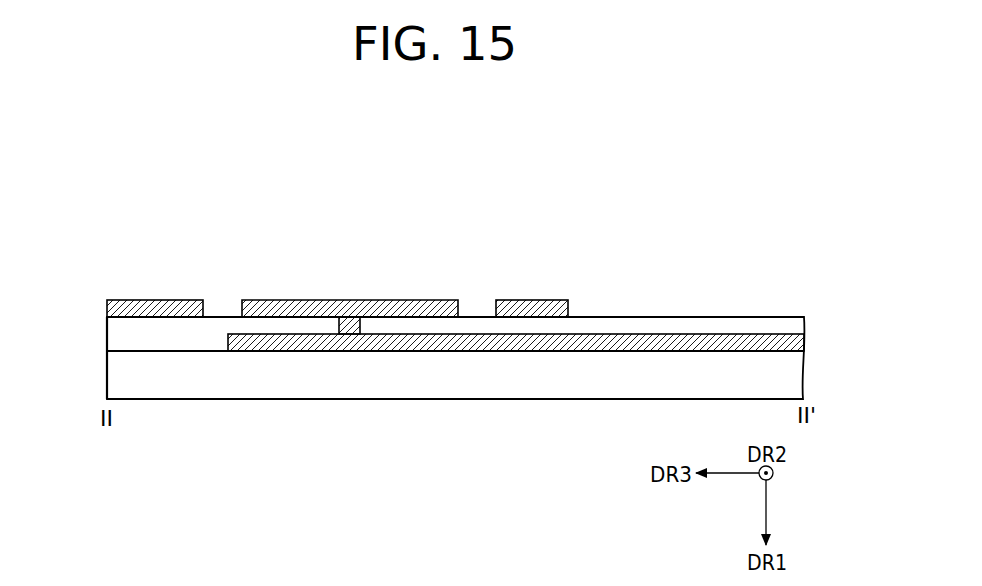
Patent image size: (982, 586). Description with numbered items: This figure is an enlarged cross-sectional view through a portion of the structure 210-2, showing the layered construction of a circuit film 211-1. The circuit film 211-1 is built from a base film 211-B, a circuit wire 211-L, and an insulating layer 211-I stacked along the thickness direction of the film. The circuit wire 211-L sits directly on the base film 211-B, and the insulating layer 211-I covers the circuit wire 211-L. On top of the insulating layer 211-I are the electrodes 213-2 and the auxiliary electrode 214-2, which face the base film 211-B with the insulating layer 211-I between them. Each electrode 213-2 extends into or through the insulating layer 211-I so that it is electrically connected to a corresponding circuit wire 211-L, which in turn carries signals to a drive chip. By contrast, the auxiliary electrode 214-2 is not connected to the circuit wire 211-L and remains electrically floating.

The second display module / substrate stack 210-2 is at (733, 226).
The circuit film 211-1 is at (101, 318).
The base film 211-B is at (147, 388).
The insulating layer 211-I is at (203, 343).
The circuit wire 211-L is at (320, 343).
The electrode 213-2 is at (345, 300).
The auxiliary electrode 214-2 is at (152, 300).